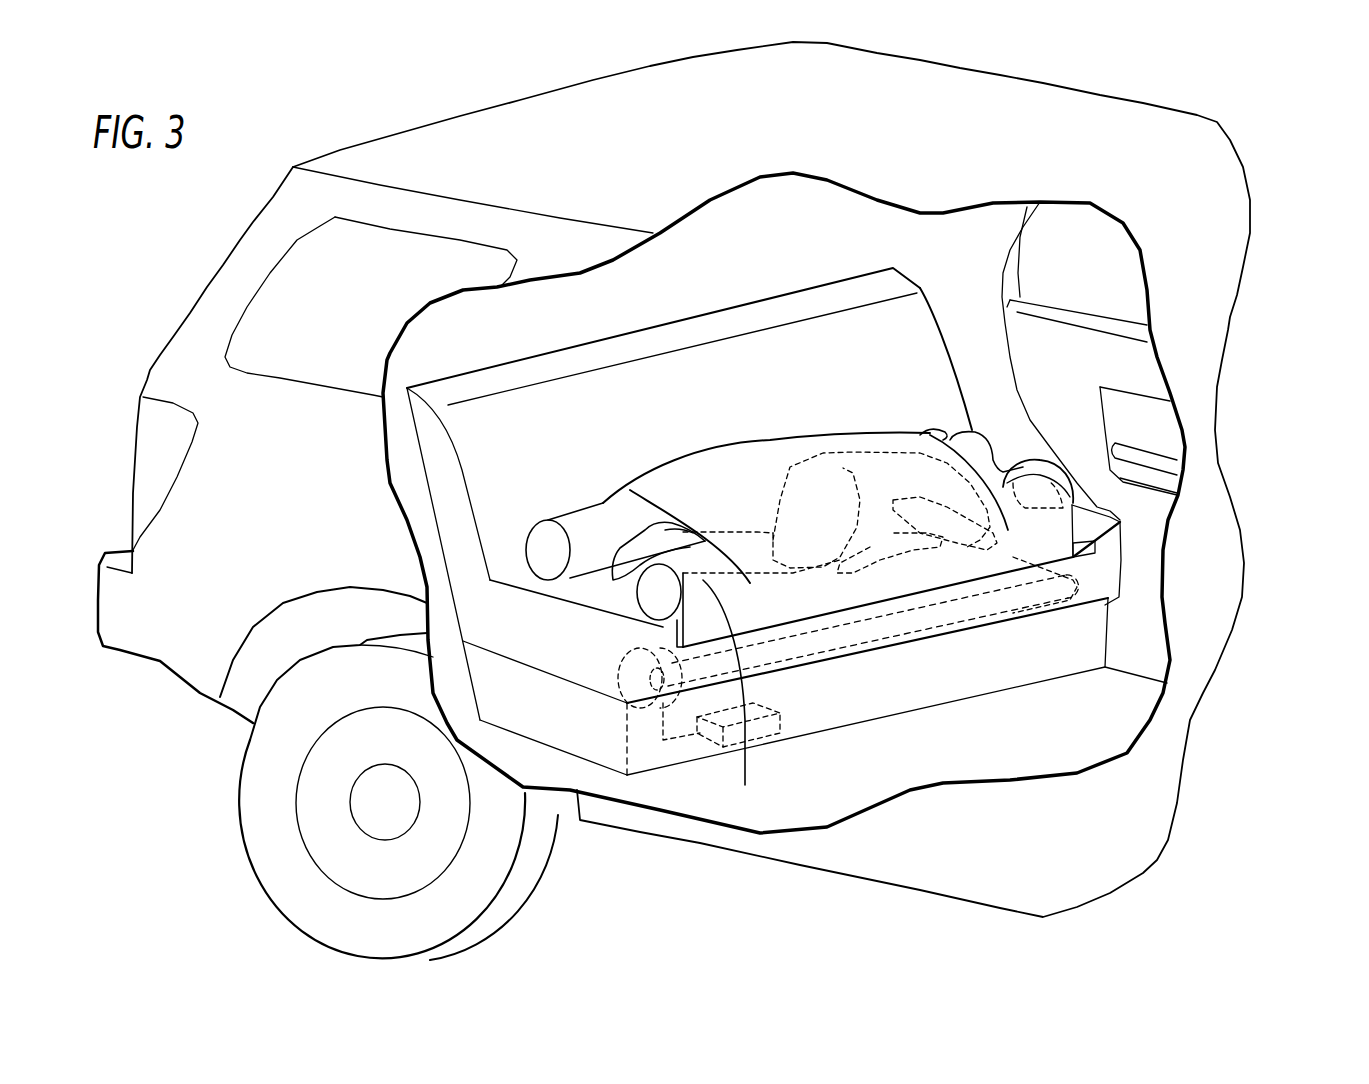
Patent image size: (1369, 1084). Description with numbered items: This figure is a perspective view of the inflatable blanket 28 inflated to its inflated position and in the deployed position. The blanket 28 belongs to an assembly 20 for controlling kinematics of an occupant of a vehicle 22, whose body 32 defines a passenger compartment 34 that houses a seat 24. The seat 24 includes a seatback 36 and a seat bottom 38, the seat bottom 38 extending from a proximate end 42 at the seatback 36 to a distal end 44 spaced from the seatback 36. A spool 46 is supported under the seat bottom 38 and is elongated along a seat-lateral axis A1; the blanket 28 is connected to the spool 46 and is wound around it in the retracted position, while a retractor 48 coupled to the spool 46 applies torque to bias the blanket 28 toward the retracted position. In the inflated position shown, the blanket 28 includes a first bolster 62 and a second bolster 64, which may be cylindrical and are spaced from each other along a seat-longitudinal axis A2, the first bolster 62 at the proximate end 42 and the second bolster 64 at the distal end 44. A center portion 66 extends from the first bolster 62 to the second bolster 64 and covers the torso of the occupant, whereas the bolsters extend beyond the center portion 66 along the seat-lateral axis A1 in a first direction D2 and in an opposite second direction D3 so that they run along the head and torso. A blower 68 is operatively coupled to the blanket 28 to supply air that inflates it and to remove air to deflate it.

The assembly 20 is at (1054, 434).
The vehicle 22 is at (396, 92).
The seat 24 is at (928, 353).
The blanket 28 is at (738, 468).
The body 32 is at (173, 370).
The passenger compartment 34 is at (1068, 258).
The seatback 36 is at (733, 367).
The seat bottom 38 is at (617, 613).
The proximate end 42 is at (527, 573).
The distal end 44 is at (667, 627).
The spool 46 is at (930, 617).
The retractor 48 is at (617, 673).
The first bolster 62 is at (730, 697).
The second bolster 64 is at (570, 523).
The center portion 66 is at (778, 468).
The blower 68 is at (780, 720).
The first direction D2 is at (906, 369).
The second direction D3 is at (691, 418).
The seat-lateral axis A1 is at (1335, 791).
The seat-longitudinal axis A2 is at (868, 953).